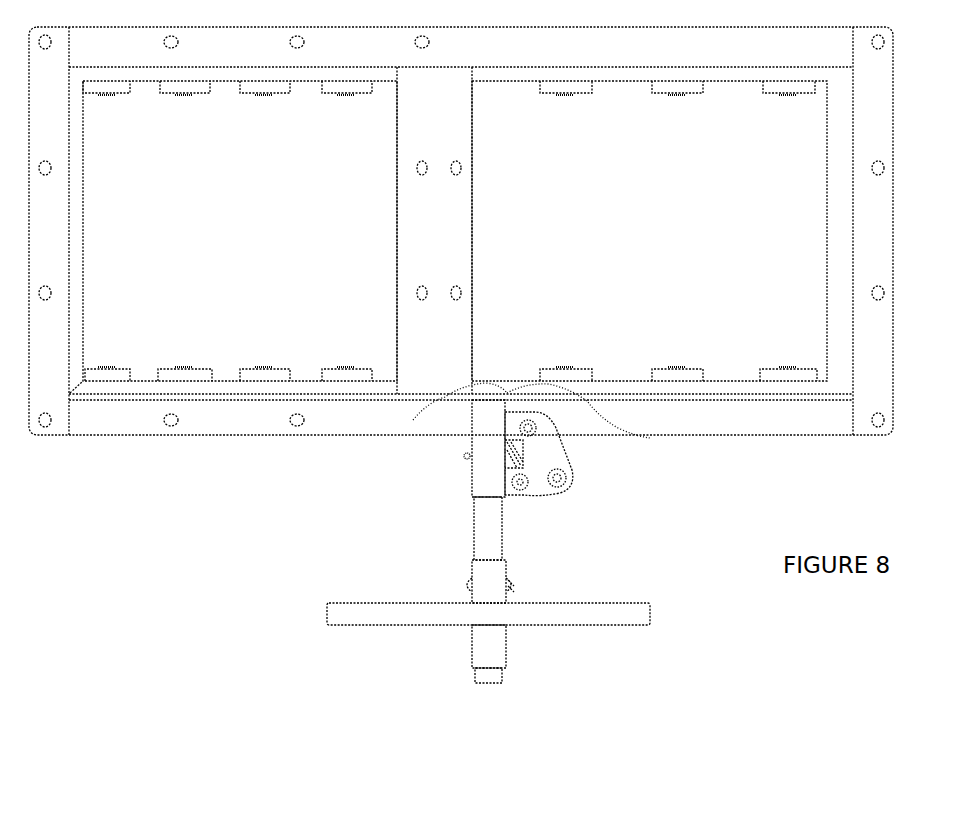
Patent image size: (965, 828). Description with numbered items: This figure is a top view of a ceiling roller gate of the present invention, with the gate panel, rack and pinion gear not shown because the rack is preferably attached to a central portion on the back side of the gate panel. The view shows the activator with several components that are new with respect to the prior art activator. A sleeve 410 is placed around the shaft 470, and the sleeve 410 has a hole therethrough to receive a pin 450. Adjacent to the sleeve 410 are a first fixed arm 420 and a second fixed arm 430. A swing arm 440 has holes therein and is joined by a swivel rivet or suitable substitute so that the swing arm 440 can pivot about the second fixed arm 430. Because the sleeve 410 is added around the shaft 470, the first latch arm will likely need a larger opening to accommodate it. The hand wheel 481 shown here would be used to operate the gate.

The sleeve 410 is at (476, 420).
The first fixed arm 420 is at (520, 492).
The second fixed arm 430 is at (507, 420).
The swing arm 440 is at (545, 455).
The pin 450 is at (463, 458).
The shaft 470 is at (488, 532).
The hand wheel 481 is at (400, 620).